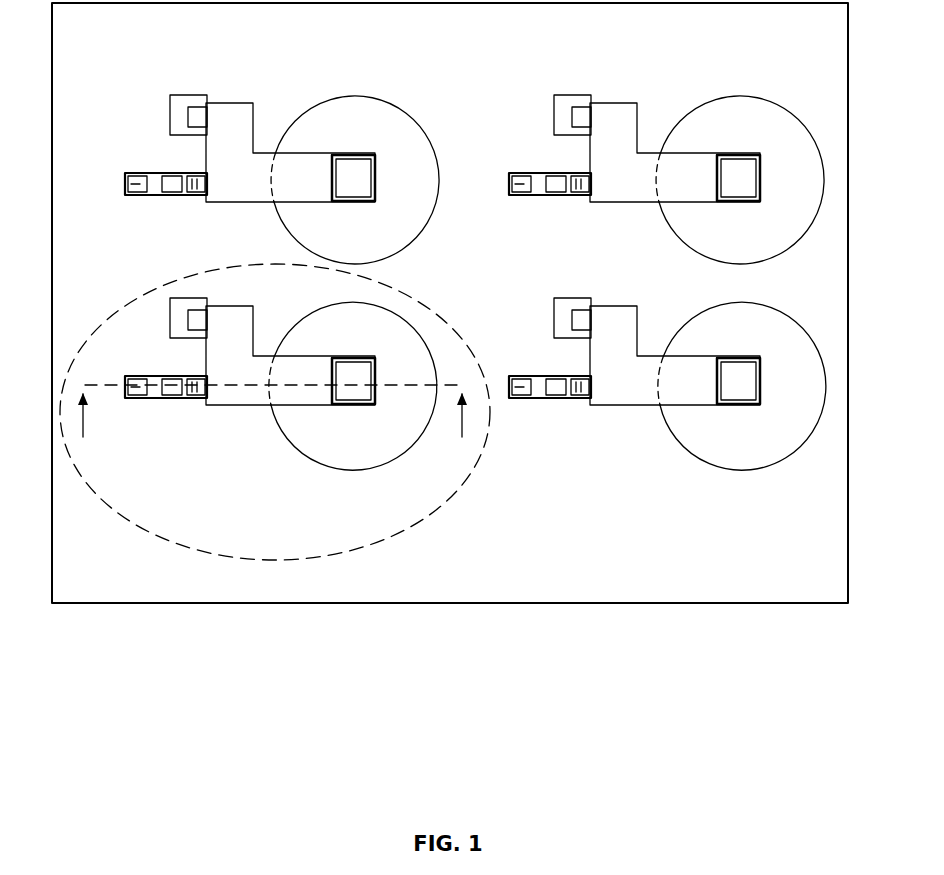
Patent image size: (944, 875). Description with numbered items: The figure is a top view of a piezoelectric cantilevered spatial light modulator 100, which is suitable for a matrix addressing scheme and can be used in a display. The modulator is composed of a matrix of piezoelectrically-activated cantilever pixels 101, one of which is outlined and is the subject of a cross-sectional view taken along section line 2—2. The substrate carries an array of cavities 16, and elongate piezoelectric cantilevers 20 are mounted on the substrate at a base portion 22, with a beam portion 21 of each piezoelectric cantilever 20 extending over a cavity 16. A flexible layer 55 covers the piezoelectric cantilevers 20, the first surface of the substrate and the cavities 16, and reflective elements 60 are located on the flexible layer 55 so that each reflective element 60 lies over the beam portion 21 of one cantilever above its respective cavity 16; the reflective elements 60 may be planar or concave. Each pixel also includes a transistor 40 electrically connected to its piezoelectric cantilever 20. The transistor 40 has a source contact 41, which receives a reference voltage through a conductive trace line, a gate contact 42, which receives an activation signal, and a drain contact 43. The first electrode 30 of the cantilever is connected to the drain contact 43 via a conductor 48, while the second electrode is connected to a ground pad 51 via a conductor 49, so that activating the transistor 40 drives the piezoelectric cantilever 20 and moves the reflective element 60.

The section line 2 is at (271, 424).
The cavity 16 is at (408, 140).
The piezoelectric cantilever 20 is at (311, 82).
The beam portion 21 is at (322, 212).
The base portion 22 is at (277, 113).
The first electrode 30 is at (237, 177).
The transistor 40 is at (155, 192).
The source contact 41 is at (138, 185).
The gate contact 42 is at (173, 182).
The drain contact 43 is at (192, 192).
The conductor 48 is at (203, 190).
The conductor 49 is at (200, 117).
The ground pad 51 is at (183, 107).
The flexible layer 55 is at (780, 567).
The reflective element 60 is at (343, 173).
The piezoelectric cantilevered spatial light modulator 100 is at (453, 657).
The piezoelectrically-activated cantilever pixel 101 is at (419, 529).